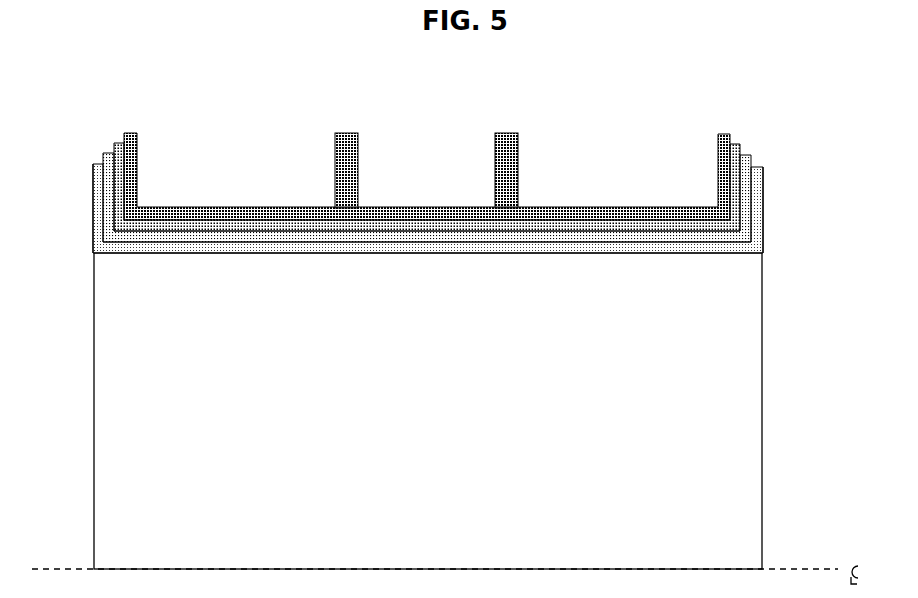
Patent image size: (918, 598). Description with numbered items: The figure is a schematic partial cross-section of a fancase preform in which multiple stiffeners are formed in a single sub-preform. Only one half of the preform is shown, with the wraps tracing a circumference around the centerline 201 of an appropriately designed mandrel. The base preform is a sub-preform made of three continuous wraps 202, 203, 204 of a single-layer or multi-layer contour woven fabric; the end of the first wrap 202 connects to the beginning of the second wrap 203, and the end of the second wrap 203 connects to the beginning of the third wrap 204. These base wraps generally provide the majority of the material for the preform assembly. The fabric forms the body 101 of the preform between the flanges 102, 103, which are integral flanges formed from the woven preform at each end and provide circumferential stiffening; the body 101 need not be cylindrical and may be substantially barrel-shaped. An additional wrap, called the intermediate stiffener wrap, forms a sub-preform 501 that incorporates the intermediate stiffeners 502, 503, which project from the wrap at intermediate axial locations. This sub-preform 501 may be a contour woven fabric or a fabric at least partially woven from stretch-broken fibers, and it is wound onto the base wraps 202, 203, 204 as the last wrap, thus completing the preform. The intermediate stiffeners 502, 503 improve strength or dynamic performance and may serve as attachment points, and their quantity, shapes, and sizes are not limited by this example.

The barrel-shaped body 101 is at (365, 275).
The integral flange 102 is at (790, 213).
The integral flange 103 is at (72, 215).
The centerline 201 is at (850, 552).
The first wrap 202 is at (478, 245).
The second wrap 203 is at (527, 235).
The third wrap 204 is at (643, 225).
The sub-preform 501 is at (412, 210).
The intermediate stiffener 502 is at (532, 157).
The intermediate stiffener 503 is at (325, 148).